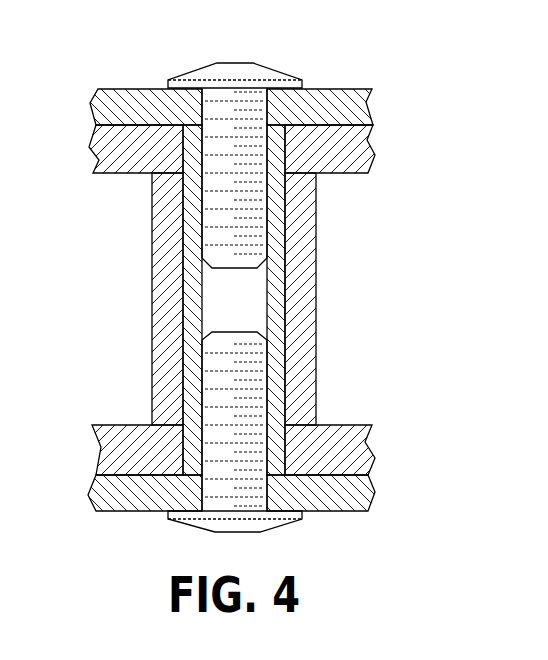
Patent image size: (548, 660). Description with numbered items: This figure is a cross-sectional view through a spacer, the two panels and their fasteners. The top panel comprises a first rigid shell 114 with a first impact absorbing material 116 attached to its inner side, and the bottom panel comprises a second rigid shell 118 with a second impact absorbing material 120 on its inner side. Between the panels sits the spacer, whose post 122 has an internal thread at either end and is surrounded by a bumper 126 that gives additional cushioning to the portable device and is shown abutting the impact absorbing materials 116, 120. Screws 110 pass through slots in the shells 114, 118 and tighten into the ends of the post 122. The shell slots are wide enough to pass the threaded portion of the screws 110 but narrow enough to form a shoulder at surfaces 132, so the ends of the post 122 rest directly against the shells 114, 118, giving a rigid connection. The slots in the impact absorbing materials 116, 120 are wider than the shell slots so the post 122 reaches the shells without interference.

The screw 110 is at (237, 62).
The first rigid shell 114 is at (345, 89).
The first impact absorbing material 116 is at (345, 173).
The second rigid shell 118 is at (125, 511).
The second impact absorbing material 120 is at (122, 426).
The post 122 is at (186, 300).
The bumper 126 is at (316, 287).
The shoulder surfaces 132 is at (193, 118).